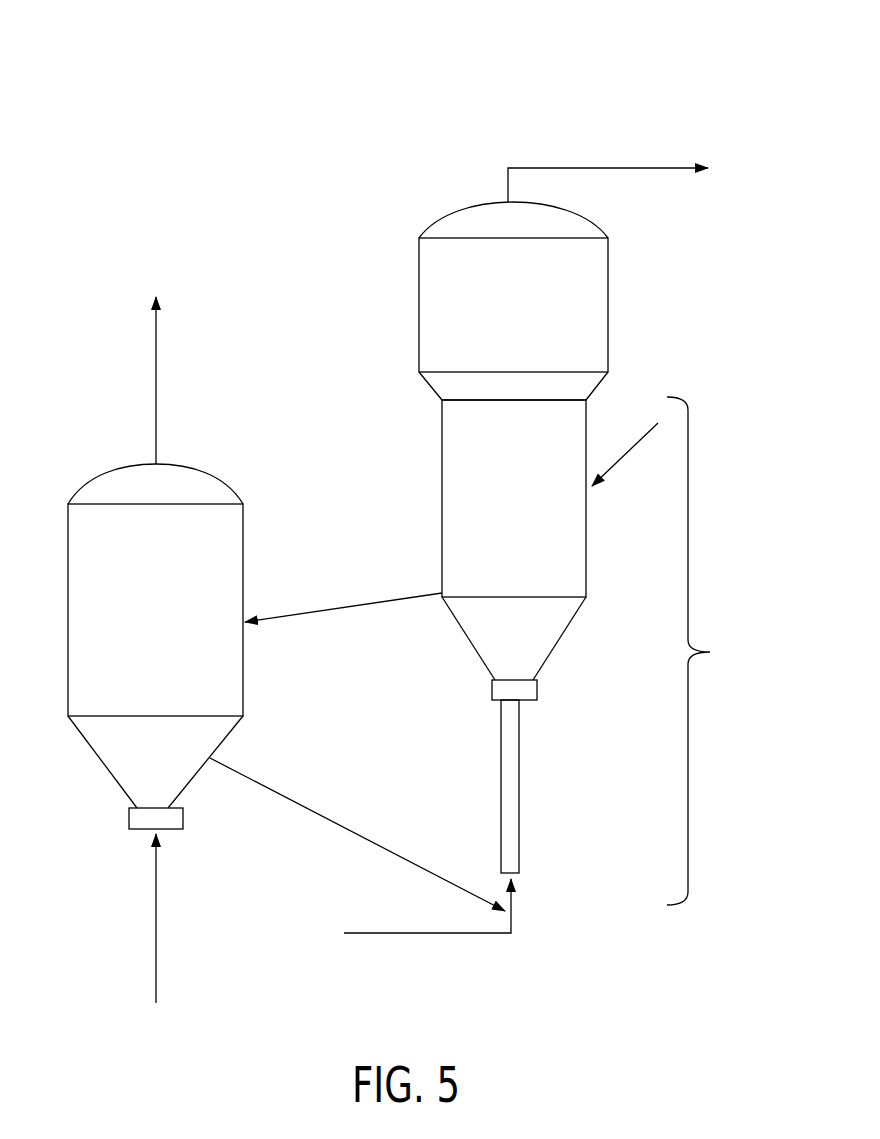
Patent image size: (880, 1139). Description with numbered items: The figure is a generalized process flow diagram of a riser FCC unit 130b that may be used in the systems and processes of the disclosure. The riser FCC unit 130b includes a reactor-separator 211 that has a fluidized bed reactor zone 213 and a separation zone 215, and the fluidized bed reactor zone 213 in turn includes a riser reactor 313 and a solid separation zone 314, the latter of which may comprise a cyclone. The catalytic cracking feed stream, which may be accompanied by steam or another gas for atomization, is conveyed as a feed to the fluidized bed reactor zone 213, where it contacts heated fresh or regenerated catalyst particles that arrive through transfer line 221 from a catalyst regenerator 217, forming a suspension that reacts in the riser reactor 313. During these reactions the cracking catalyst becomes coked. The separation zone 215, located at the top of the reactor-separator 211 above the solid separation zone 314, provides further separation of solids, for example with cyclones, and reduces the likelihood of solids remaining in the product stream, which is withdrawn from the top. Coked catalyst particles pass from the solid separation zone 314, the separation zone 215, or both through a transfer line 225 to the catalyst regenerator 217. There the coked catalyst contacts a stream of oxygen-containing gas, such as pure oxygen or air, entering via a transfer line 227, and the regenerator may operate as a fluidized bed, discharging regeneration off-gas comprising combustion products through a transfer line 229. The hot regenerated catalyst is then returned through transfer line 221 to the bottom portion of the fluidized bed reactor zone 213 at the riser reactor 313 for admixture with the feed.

The riser FCC unit 130b is at (728, 86).
The separation zone 215 is at (597, 297).
The solid separation zone 314 is at (453, 470).
The reactor-separator 211 is at (630, 448).
The fluidized bed reactor zone 213 is at (708, 651).
The riser reactor 313 is at (512, 802).
The transfer line 221 is at (315, 815).
The transfer line 225 is at (367, 605).
The catalyst regenerator 217 is at (233, 547).
The transfer line 229 is at (156, 373).
The transfer line 227 is at (156, 923).